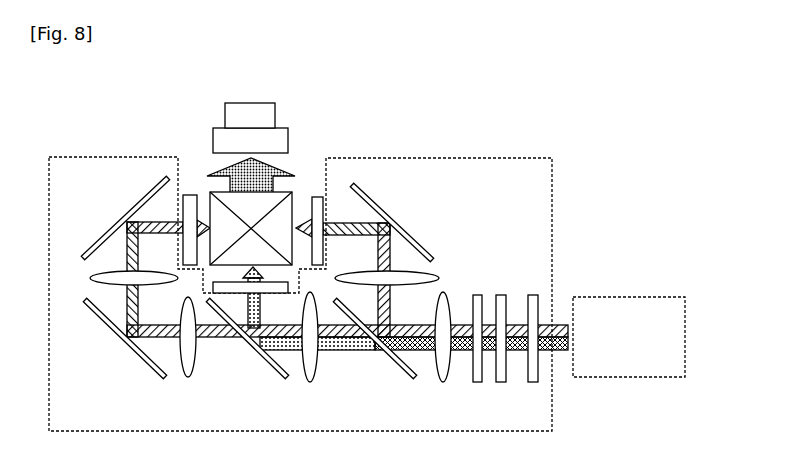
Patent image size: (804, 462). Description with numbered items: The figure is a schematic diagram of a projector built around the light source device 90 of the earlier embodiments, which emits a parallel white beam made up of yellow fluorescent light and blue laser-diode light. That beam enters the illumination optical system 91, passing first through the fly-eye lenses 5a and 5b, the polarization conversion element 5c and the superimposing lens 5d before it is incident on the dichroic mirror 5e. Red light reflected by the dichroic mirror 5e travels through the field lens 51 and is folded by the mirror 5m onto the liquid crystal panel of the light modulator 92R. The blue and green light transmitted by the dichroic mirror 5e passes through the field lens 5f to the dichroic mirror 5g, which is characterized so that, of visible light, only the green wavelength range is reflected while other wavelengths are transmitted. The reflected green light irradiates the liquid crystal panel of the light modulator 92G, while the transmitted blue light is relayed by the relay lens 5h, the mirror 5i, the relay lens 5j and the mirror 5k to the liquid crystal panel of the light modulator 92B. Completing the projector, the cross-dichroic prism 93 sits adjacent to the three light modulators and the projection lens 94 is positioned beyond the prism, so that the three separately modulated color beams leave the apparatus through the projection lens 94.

The light source device 90 is at (640, 377).
The illumination optical system 91 is at (402, 158).
The light modulator 92B is at (187, 194).
The light modulator 92G is at (259, 296).
The light modulator 92R is at (316, 196).
The cross-dichroic prism 93 is at (287, 192).
The projection lens 94 is at (225, 112).
The field lens 51 is at (434, 276).
The fly-eye lens 5a is at (533, 382).
The fly-eye lens 5b is at (501, 382).
The polarization conversion element 5c is at (477, 382).
The superimposing lens 5d is at (443, 382).
The dichroic mirror 5e is at (408, 378).
The field lens 5f is at (317, 370).
The dichroic mirror 5g is at (285, 378).
The relay lens 5h is at (190, 377).
The mirror 5i is at (163, 378).
The relay lens 5j is at (91, 278).
The mirror 5k is at (107, 233).
The mirror 5m is at (388, 209).